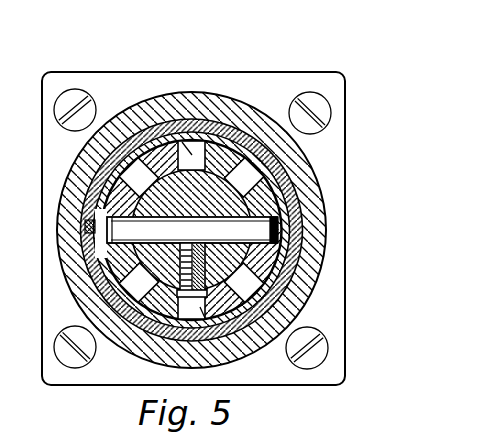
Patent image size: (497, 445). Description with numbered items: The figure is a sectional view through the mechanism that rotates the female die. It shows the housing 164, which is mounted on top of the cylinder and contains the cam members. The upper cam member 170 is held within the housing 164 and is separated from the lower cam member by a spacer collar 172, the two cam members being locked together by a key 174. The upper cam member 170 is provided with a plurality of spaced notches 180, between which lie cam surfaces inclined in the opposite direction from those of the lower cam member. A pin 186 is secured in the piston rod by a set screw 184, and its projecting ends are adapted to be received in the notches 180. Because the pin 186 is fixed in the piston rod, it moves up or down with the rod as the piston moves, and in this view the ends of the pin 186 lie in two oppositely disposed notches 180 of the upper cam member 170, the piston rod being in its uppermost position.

The housing 164 is at (332, 188).
The upper cam member 170 is at (231, 158).
The spacer collar 172 is at (88, 178).
The key 174 is at (86, 229).
The notches 180 is at (140, 177).
The set screw 184 is at (198, 256).
The pin 186 is at (272, 223).